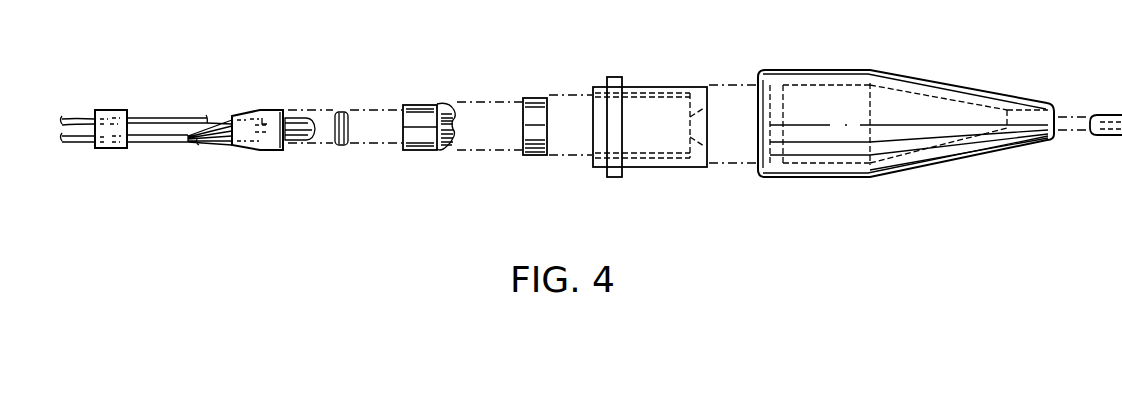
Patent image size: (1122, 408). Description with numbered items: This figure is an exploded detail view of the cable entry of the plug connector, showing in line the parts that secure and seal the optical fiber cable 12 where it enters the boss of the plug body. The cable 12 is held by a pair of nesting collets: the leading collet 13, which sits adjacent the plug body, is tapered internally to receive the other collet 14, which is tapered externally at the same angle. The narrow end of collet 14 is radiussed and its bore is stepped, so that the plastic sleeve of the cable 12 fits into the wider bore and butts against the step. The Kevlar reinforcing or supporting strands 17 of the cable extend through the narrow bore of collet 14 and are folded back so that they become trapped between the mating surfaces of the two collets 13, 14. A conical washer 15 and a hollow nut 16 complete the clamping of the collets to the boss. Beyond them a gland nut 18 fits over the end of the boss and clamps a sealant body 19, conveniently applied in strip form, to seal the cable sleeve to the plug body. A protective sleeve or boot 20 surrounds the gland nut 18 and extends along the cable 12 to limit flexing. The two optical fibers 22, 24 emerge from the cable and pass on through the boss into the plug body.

The optical fiber cable 12 is at (1110, 114).
The leading collet 13 is at (108, 111).
The collet 14 is at (265, 109).
The conical washer 15 is at (343, 111).
The hollow nut 16 is at (300, 118).
The reinforcing or supporting strands 17 is at (218, 121).
The gland nut 18 is at (660, 86).
The sealant body 19 is at (528, 97).
The protective sleeve or boot 20 is at (842, 70).
The optical fiber 22 is at (157, 118).
The optical fiber 24 is at (157, 142).